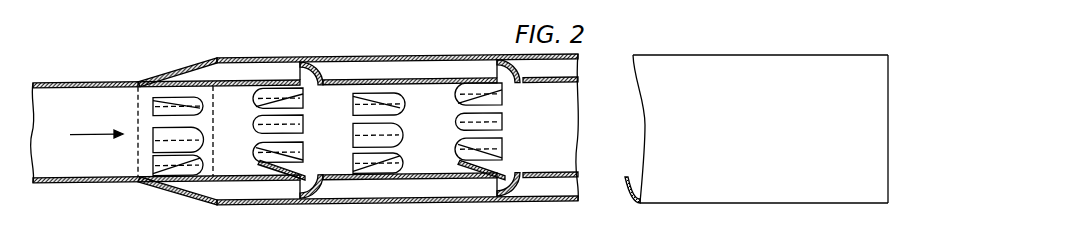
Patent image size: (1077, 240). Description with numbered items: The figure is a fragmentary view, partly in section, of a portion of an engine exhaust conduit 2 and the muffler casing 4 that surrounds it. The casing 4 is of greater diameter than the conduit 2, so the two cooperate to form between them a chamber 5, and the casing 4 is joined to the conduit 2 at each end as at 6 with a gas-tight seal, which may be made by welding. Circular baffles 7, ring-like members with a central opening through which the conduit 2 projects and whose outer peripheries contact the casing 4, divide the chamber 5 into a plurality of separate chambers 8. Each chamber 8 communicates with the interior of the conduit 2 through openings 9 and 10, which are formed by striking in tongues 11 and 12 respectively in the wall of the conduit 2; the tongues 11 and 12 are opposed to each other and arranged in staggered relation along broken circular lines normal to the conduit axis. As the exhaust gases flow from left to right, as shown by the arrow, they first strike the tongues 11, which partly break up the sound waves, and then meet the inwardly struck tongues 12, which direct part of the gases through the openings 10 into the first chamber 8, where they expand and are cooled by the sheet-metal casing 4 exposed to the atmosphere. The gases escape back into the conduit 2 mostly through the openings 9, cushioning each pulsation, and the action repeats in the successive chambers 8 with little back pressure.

The exhaust conduit 2 is at (100, 183).
The casing 4 is at (869, 55).
The chamber 5 is at (415, 72).
The joint 6 is at (138, 82).
The circular baffles 7 is at (322, 71).
The separate chambers 8 is at (268, 198).
The openings 9 is at (177, 122).
The openings 10 is at (270, 93).
The tongues 11 is at (155, 102).
The tongues 12 is at (290, 101).